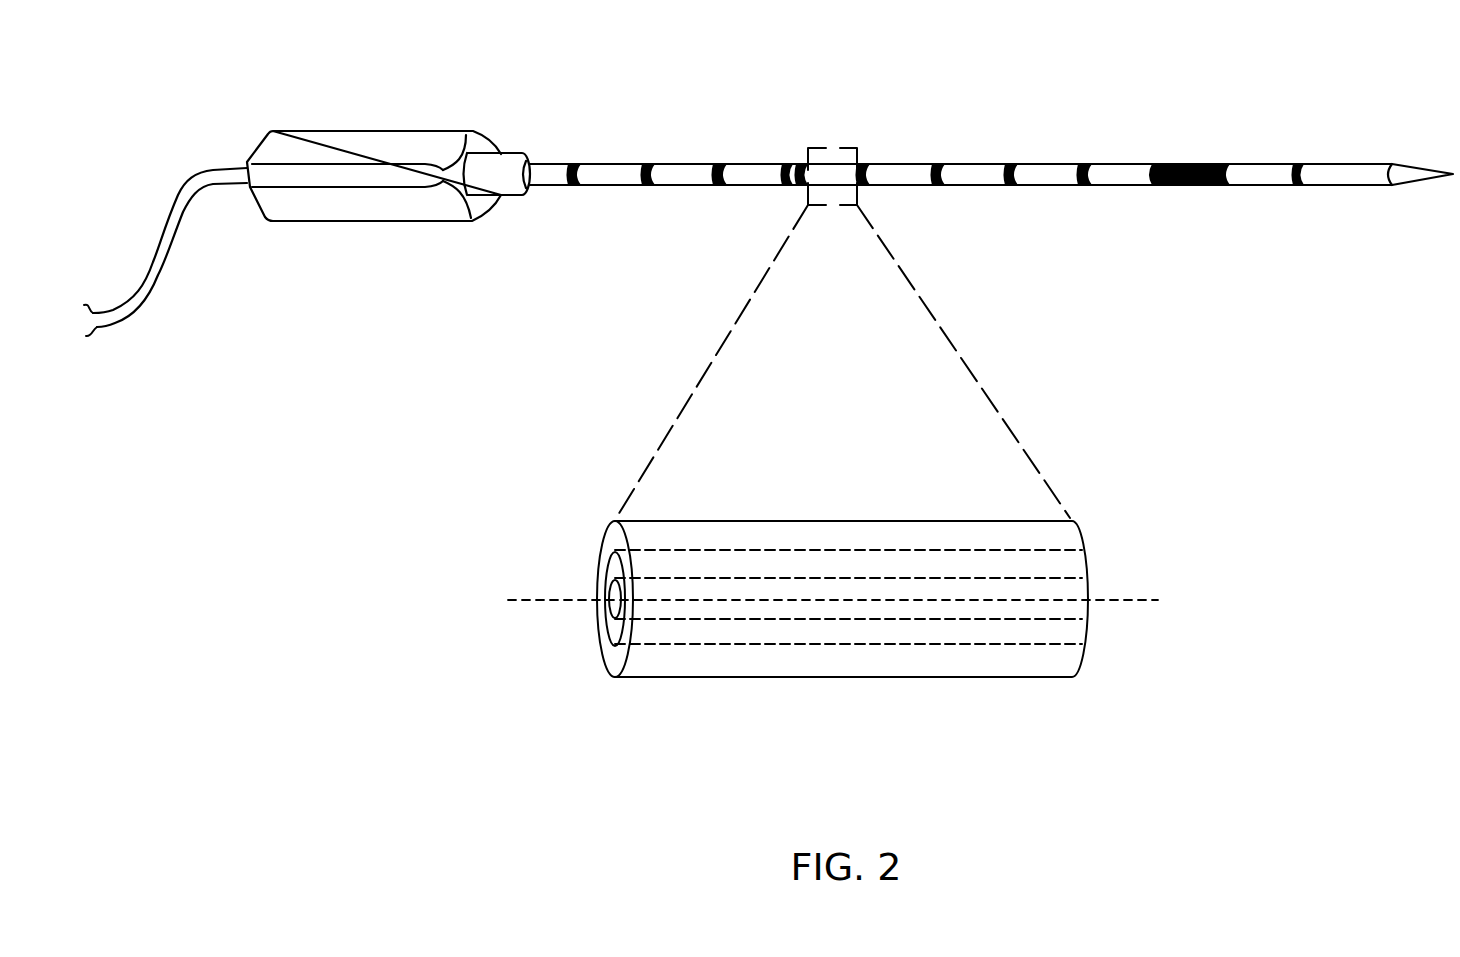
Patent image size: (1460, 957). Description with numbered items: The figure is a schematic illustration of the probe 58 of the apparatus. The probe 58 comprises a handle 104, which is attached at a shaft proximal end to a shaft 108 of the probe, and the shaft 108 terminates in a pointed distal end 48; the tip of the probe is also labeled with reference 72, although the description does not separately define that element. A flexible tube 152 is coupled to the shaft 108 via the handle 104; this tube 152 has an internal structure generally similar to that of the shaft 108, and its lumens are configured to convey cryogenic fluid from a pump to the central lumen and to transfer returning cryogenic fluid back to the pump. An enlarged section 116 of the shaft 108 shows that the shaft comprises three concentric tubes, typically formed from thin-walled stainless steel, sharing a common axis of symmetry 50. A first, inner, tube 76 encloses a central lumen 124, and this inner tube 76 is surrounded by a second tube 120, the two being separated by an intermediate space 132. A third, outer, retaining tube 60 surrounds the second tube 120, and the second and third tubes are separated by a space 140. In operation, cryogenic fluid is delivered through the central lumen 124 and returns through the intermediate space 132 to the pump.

The probe 58 is at (404, 313).
The handle 104 is at (352, 143).
The flexible tube 152 is at (172, 248).
The pointed distal end 48 is at (1368, 187).
The distal tip 72 is at (1430, 180).
The shaft 108 is at (763, 173).
The section 116 is at (812, 726).
The outer retaining tube 60 is at (762, 520).
The space 140 is at (843, 530).
The intermediate space 132 is at (1042, 628).
The central lumen 124 is at (750, 608).
The second tube 120 is at (982, 644).
The inner tube 76 is at (667, 617).
The axis of symmetry 50 is at (1133, 602).